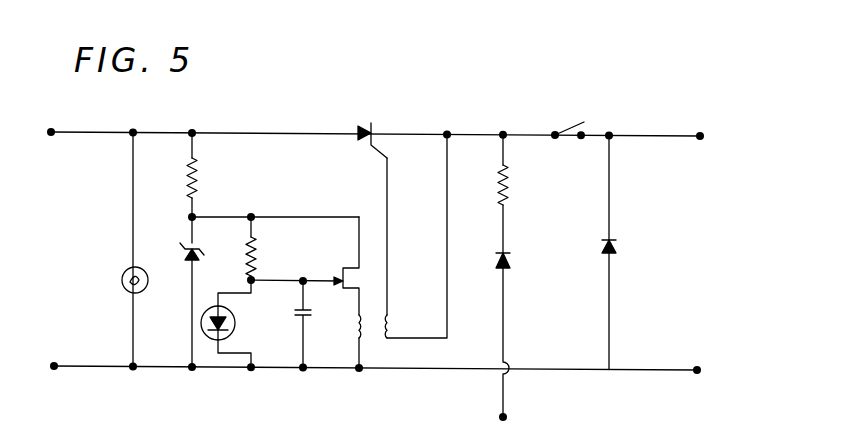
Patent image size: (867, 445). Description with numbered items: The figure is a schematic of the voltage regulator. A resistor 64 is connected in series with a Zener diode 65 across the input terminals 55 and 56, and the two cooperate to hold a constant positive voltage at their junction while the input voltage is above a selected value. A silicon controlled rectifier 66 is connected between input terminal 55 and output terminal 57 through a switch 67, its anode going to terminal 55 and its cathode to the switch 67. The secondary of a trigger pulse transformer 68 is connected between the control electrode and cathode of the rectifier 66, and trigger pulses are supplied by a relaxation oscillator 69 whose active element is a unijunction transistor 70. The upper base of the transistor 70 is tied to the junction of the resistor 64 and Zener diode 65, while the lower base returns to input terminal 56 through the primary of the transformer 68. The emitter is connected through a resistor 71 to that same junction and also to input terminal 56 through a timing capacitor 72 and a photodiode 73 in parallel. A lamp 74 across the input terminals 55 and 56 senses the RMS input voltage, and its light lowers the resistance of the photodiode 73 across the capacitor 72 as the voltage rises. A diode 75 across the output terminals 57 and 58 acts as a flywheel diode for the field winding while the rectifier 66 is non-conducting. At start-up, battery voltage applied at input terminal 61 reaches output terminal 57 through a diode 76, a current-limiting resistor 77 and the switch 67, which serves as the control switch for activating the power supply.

The input terminal 55 is at (51, 132).
The input terminal 56 is at (54, 366).
The output terminal 57 is at (700, 136).
The output terminal 58 is at (697, 370).
The input terminal 61 is at (506, 417).
The resistor 64 is at (197, 190).
The Zener diode 65 is at (201, 247).
The silicon controlled rectifier 66 is at (371, 106).
The switch 67 is at (580, 125).
The trigger pulse transformer 68 is at (376, 340).
The relaxation oscillator 69 is at (313, 258).
The unijunction transistor 70 is at (350, 283).
The resistor 71 is at (253, 241).
The capacitor 72 is at (312, 317).
The photodiode 73 is at (209, 311).
The lamp 74 is at (127, 271).
The diode 75 is at (614, 239).
The diode 76 is at (510, 263).
The current-limiting resistor 77 is at (508, 198).